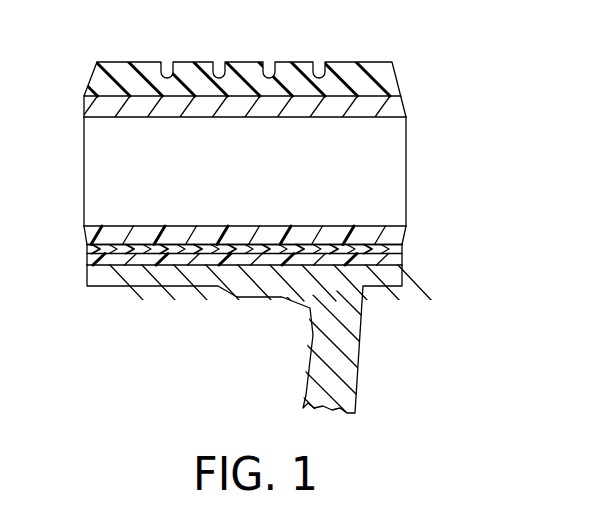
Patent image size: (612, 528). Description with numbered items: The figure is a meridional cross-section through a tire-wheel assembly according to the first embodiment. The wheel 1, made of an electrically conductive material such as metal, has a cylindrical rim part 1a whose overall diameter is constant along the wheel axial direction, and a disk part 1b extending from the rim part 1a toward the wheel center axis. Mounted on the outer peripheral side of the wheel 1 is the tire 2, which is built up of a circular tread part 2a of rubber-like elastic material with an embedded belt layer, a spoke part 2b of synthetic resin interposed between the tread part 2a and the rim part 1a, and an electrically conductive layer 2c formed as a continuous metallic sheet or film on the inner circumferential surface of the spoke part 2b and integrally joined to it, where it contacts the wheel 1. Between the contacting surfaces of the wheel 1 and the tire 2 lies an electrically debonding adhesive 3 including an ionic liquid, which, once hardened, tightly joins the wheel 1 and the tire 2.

The wheel 1 is at (360, 377).
The rim part 1a is at (160, 286).
The disk part 1b is at (316, 388).
The tire 2 is at (367, 62).
The tread part 2a is at (395, 84).
The spoke part 2b is at (397, 177).
The electrically conductive layer 2c is at (395, 250).
The electrically debonding adhesive 3 is at (398, 262).